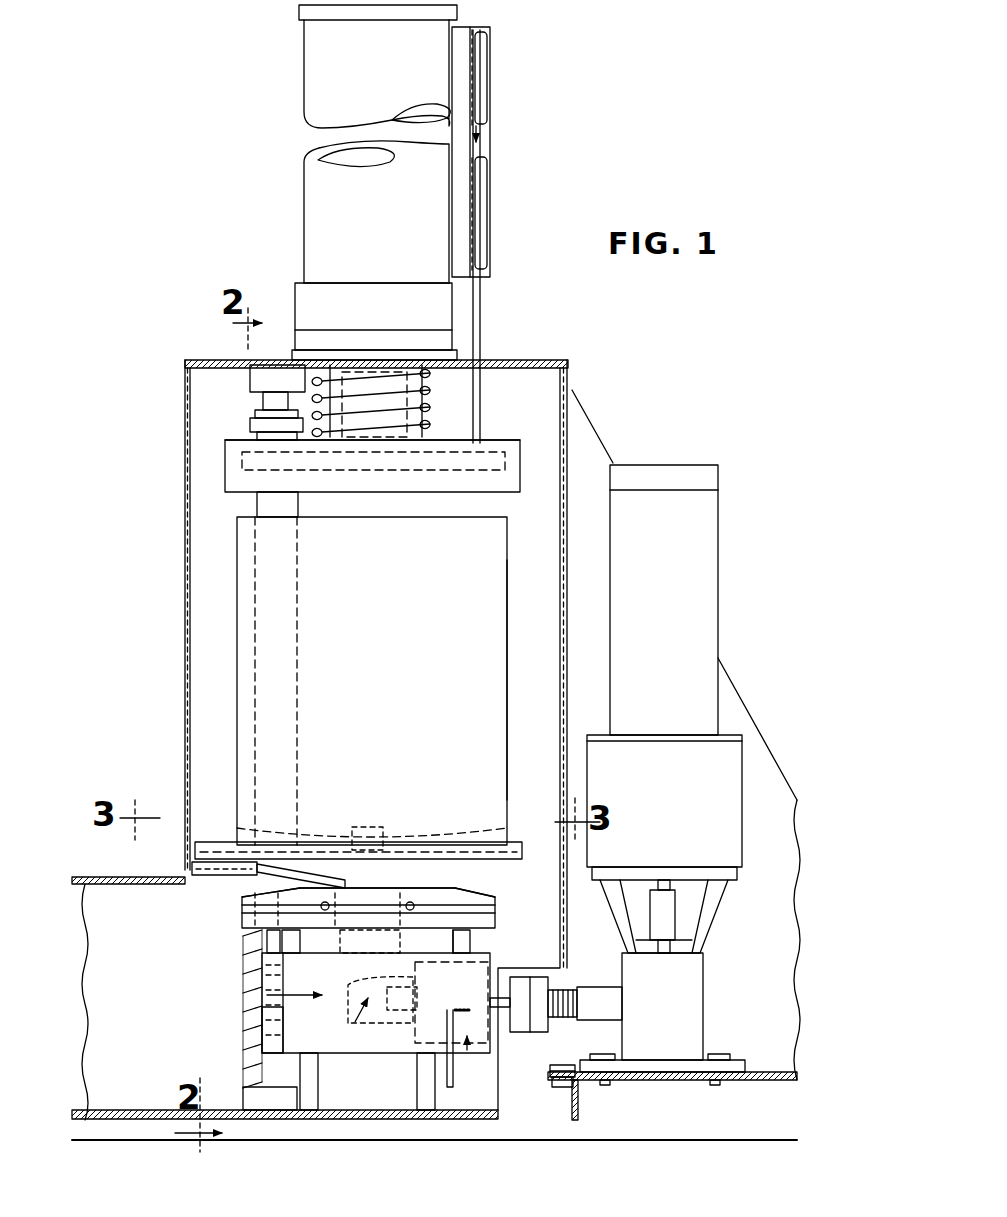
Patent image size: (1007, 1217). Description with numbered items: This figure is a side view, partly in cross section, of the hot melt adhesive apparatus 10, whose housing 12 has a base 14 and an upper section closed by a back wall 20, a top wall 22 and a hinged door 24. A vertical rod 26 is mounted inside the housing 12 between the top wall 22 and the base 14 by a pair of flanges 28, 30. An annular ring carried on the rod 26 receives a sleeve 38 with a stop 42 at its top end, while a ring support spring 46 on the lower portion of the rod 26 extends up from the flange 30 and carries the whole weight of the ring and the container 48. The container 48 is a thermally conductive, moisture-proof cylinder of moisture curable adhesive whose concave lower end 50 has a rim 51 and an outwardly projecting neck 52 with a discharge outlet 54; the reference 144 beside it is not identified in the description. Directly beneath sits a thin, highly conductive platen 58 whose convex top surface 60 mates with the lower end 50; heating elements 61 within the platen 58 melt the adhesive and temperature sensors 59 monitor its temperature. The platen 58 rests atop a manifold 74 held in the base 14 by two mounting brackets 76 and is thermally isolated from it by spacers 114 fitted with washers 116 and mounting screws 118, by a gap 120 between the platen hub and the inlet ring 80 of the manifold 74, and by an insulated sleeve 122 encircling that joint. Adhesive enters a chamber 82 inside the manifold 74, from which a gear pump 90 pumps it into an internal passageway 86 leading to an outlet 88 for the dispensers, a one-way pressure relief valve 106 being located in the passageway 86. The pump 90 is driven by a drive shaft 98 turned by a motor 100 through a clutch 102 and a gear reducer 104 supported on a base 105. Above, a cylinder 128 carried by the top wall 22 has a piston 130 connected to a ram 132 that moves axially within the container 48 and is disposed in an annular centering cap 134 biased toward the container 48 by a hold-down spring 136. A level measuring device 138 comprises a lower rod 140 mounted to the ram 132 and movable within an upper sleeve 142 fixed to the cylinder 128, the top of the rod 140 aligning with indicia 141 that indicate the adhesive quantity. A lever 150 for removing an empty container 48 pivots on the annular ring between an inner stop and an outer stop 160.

The apparatus 10 is at (618, 207).
The housing 12 is at (381, 719).
The base 14 is at (115, 918).
The back wall 20 is at (565, 458).
The top wall 22 is at (515, 362).
The hinged door 24 is at (185, 512).
The vertical rod 26 is at (245, 955).
The flange 28 is at (258, 376).
The flange 30 is at (246, 1110).
The sleeve 38 is at (300, 598).
The stop 42 is at (262, 426).
The ring support spring 46 is at (258, 978).
The container 48 is at (509, 636).
The concave lower end 50 is at (457, 840).
The rim 51 is at (512, 842).
The neck 52 is at (350, 840).
The discharge outlet 54 is at (368, 860).
The platen 58 is at (499, 898).
The temperature sensor 59 is at (301, 942).
The convex top surface 60 is at (422, 836).
The first set of heating elements 61 is at (325, 901).
The manifold 74 is at (262, 999).
The mounting bracket 76 is at (417, 1060).
The ring 80 is at (370, 942).
The chamber 82 is at (359, 1008).
The internal passageway 86 is at (418, 1000).
The outlet 88 is at (417, 976).
The gear pump 90 is at (468, 1055).
The drive shaft 98 is at (561, 1040).
The motor 100 is at (713, 538).
The clutch 102 is at (710, 803).
The gear reducer 104 is at (672, 1010).
The base 105 is at (765, 1085).
The pressure relief valve 106 is at (346, 1040).
The spacer 114 is at (268, 935).
The washer 116 is at (472, 945).
The mounting screw 118 is at (265, 1024).
The gap 120 is at (400, 945).
The insulated sleeve 122 is at (306, 997).
The cylinder 128 is at (295, 133).
The piston 130 is at (358, 345).
The ram 132 is at (485, 480).
The annular centering cap 134 is at (448, 442).
The hold-down spring 136 is at (430, 398).
The level measuring device 138 is at (426, 224).
The lower rod 140 is at (488, 135).
The indicia 141 is at (486, 93).
The upper sleeve 142 is at (488, 196).
The column 144 is at (508, 526).
The lever 150 is at (222, 860).
The outer stop 160 is at (205, 880).